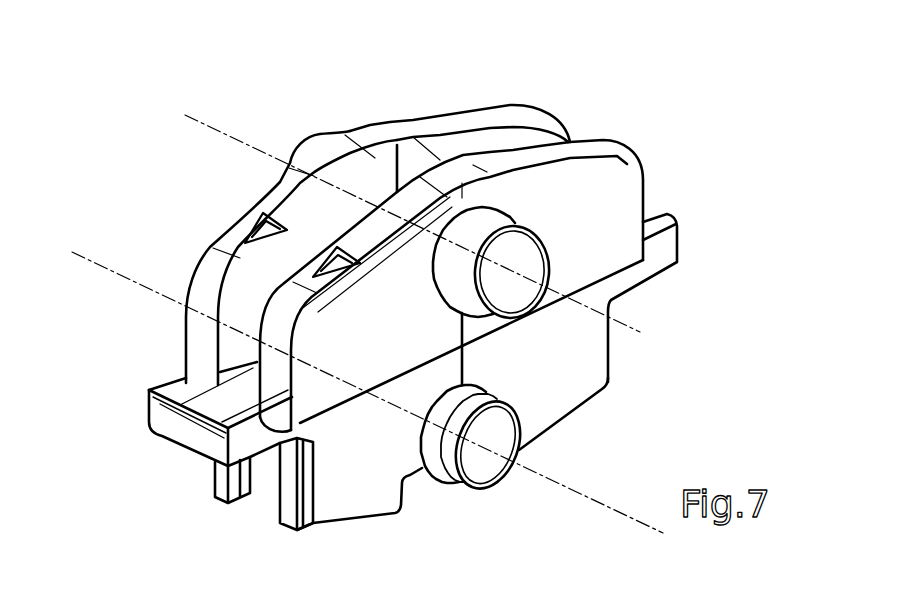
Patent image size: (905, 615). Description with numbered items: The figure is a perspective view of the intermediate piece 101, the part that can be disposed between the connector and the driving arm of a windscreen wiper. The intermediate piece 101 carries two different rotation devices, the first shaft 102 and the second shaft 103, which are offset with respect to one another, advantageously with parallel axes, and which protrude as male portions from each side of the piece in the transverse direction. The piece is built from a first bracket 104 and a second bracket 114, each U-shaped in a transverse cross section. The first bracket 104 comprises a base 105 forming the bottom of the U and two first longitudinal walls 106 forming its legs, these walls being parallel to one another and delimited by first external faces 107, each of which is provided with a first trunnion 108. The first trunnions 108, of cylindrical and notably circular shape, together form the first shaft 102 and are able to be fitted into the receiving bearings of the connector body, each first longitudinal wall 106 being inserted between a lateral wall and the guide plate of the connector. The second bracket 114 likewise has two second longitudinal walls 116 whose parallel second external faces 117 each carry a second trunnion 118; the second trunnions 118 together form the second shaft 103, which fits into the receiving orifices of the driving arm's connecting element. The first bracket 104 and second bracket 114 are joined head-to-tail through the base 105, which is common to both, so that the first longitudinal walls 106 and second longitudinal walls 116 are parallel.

The intermediate piece 101 is at (635, 79).
The first shaft 102 is at (378, 405).
The second shaft 103 is at (412, 219).
The first bracket 104 is at (655, 353).
The base 105 is at (149, 414).
The first longitudinal walls 106 is at (216, 500).
The first external faces 107 is at (553, 373).
The first trunnion 108 is at (503, 480).
The second bracket 114 is at (170, 338).
The second longitudinal walls 116 is at (453, 110).
The second external faces 117 is at (587, 195).
The second trunnion 118 is at (550, 257).